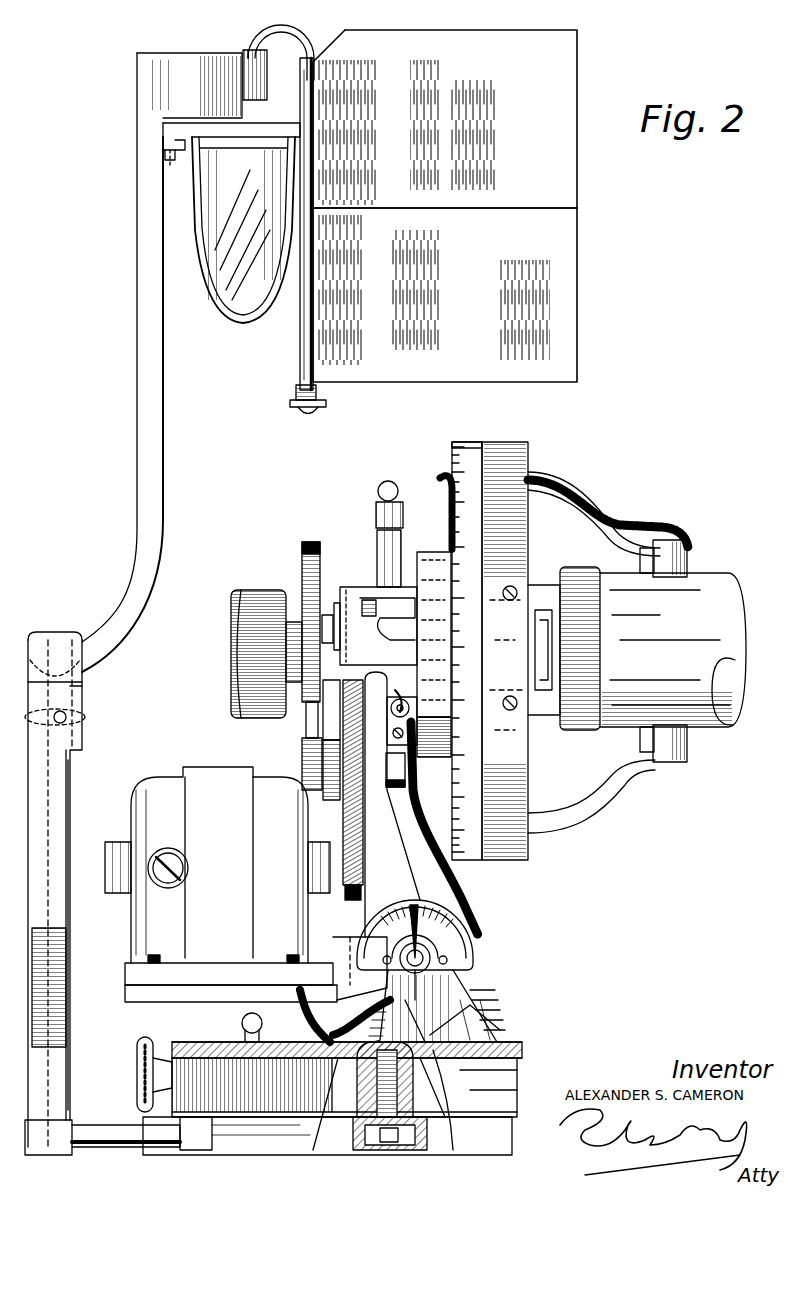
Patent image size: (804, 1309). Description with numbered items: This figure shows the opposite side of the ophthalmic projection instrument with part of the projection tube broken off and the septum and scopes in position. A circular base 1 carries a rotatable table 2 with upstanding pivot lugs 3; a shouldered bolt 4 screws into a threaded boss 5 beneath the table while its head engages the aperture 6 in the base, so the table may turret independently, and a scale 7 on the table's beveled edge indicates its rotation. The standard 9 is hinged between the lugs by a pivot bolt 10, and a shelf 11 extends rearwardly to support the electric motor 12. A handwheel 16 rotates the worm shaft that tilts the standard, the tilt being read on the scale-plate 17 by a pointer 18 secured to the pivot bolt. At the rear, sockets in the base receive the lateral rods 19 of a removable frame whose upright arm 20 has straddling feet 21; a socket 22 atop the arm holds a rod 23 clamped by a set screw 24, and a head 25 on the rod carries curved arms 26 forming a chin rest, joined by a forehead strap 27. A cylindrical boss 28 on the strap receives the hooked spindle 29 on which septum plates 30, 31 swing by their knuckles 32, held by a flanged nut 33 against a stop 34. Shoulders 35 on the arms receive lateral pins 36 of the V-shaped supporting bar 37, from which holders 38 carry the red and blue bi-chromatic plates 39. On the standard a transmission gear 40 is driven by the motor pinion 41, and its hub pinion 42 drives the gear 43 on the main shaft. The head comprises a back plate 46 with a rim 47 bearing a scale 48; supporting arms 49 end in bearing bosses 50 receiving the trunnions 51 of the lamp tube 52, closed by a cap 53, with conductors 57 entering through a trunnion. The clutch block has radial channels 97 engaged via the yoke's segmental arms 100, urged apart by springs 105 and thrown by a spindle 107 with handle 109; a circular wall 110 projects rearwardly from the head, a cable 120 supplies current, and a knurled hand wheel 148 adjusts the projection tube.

The circular base 1 is at (498, 1140).
The table 2 is at (502, 1082).
The pivot lugs 3 is at (470, 1035).
The shouldered bolt 4 is at (375, 1140).
The threaded boss 5 is at (402, 1085).
The aperture 6 is at (400, 1142).
The scale 7 is at (522, 1050).
The standard 9 is at (400, 880).
The pivot bolt 10 is at (415, 972).
The shelf 11 is at (225, 988).
The electric motor 12 is at (158, 926).
The handwheel 16 is at (137, 1062).
The scale-plate 17 is at (448, 930).
The pointer 18 is at (430, 958).
The lateral rods 19 is at (95, 1148).
The upright arm 20 is at (38, 805).
The straddling feet 21 is at (58, 1108).
The socket 22 is at (78, 694).
The rod 23 is at (70, 778).
The set screw 24 is at (85, 718).
The head 25 is at (42, 648).
The arms 26 is at (137, 360).
The metal strap 27 is at (212, 65).
The cylindrical boss 28 is at (267, 75).
The spindle 29 is at (296, 30).
The septum plate 30 is at (560, 125).
The septum plate 31 is at (568, 298).
The knuckles 32 is at (300, 108).
The flanged nut 33 is at (290, 403).
The stop 34 is at (322, 56).
The shoulders 35 is at (166, 152).
The lateral pins 36 is at (176, 162).
The supporting bar 37 is at (170, 130).
The holders 38 is at (212, 300).
The bi-chromatic plates 39 is at (232, 242).
The transmission gear 40 is at (345, 818).
The pinion 41 is at (352, 887).
The pinion 42 is at (302, 752).
The gear 43 is at (311, 542).
The back plate 46 is at (452, 455).
The rim 47 is at (510, 455).
The scale 48 is at (466, 446).
The supporting arms 49 is at (572, 495).
The bearing bosses 50 is at (687, 545).
The trunnions 51 is at (688, 558).
The tube 52 is at (720, 612).
The cap 53 is at (578, 730).
The conductors 57 is at (622, 522).
The radial channels 97 is at (326, 615).
The segmental arms 100 is at (375, 626).
The springs 105 is at (377, 545).
The vertical spindle 107 is at (378, 520).
The operating handle 109 is at (388, 481).
The circular wall 110 is at (424, 552).
The cable 120 is at (428, 812).
The knurled hand wheel 148 is at (233, 650).